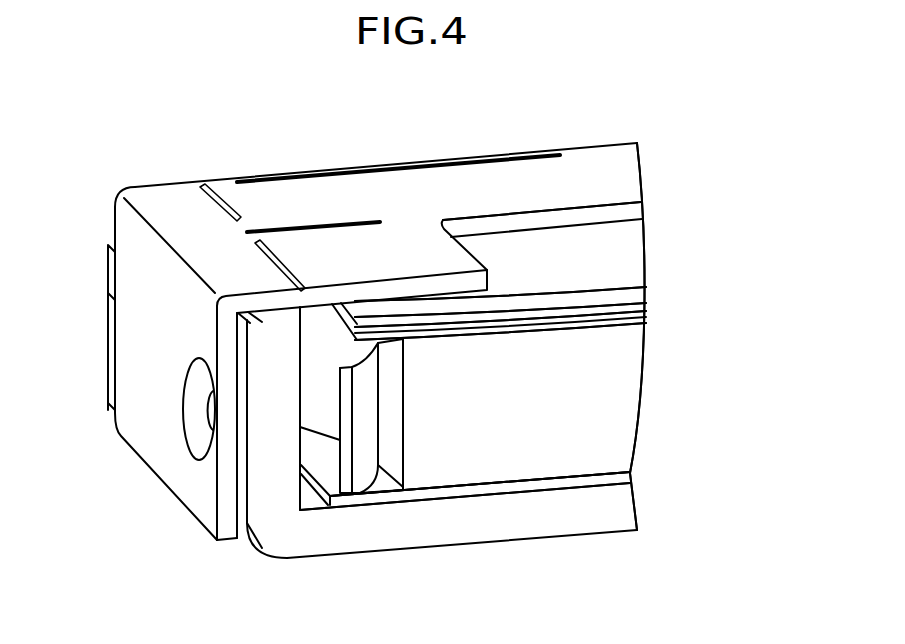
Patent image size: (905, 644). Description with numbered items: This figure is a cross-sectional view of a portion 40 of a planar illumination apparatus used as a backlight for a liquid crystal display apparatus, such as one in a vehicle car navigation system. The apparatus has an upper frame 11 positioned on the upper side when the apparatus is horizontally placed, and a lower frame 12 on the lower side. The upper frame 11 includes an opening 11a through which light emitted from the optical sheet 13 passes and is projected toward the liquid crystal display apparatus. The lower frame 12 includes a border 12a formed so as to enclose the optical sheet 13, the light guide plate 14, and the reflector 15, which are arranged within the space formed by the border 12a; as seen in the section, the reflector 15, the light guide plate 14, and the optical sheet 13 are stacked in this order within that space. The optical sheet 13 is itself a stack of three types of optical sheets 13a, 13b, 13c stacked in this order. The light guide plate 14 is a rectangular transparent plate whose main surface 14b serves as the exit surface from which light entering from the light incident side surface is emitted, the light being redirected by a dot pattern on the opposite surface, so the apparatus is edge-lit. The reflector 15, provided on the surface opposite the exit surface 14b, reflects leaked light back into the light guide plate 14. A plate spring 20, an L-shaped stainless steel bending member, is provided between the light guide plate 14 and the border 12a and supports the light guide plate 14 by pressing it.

The portion 40 is at (656, 116).
The upper frame 11 is at (170, 197).
The opening 11a is at (548, 250).
The lower frame 12 is at (360, 543).
The border 12a is at (273, 465).
The optical sheet 13 is at (735, 262).
The optical sheet 13a is at (637, 290).
The optical sheet 13b is at (637, 306).
The optical sheet 13c is at (637, 317).
The light guide plate 14 is at (613, 433).
The main surface 14b is at (590, 326).
The reflector 15 is at (517, 487).
The plate spring 20 is at (367, 468).